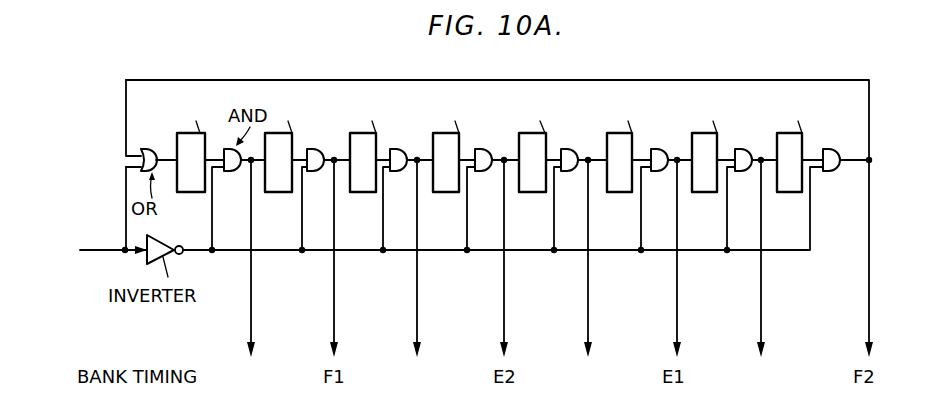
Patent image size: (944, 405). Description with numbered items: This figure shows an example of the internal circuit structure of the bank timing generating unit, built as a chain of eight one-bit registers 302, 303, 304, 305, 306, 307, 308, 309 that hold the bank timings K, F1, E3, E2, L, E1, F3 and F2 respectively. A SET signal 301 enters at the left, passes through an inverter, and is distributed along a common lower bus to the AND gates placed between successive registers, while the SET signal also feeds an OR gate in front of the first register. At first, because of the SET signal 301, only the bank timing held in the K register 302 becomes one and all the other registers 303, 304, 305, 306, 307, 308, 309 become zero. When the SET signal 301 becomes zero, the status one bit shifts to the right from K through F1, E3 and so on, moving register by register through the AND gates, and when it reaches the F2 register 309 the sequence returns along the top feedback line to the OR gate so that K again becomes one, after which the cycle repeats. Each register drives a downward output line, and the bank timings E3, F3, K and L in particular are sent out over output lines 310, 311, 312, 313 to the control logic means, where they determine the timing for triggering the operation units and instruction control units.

The SET signal 301 is at (103, 248).
The 1-bit register 302 is at (195, 192).
The 1-bit register 303 is at (284, 192).
The 1-bit register 304 is at (368, 192).
The 1-bit register 305 is at (451, 192).
The 1-bit register 306 is at (538, 192).
The 1-bit register 307 is at (624, 192).
The 1-bit register 308 is at (709, 192).
The 1-bit register 309 is at (794, 192).
The bank timing output line 310 is at (251, 316).
The bank timing output line 311 is at (417, 317).
The bank timing output line 312 is at (588, 317).
The bank timing output line 313 is at (761, 318).